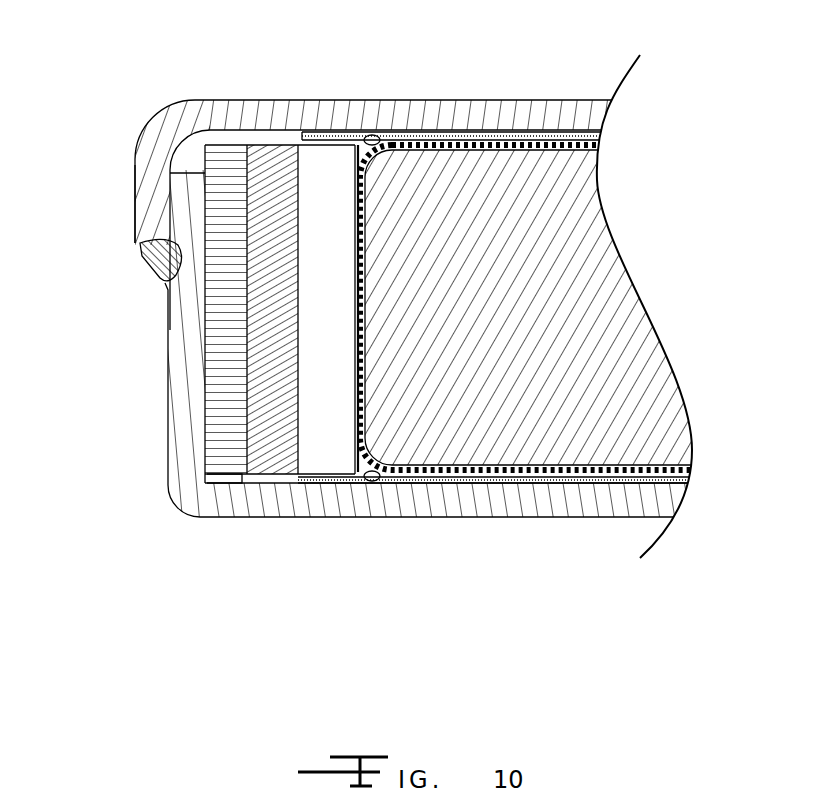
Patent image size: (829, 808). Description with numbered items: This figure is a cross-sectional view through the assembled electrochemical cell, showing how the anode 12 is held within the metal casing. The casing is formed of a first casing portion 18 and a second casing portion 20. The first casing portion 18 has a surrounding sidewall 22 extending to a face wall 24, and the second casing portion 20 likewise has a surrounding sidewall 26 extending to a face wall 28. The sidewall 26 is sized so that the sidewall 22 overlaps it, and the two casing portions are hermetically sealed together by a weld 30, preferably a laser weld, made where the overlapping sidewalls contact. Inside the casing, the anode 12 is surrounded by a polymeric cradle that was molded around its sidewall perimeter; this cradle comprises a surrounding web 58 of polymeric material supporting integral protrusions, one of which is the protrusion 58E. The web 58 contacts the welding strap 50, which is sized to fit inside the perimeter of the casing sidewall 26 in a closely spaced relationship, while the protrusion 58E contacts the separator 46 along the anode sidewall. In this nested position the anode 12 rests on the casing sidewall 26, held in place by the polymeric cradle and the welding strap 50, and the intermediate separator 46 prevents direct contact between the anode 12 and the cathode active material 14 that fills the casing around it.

The anode 12 is at (582, 318).
The cathode active material 14 is at (374, 138).
The first casing portion 18 is at (386, 275).
The second casing portion 20 is at (452, 538).
The sidewall 22 is at (138, 193).
The face wall 24 is at (450, 115).
The sidewall 26 is at (175, 395).
The face wall 28 is at (465, 505).
The weld 30 is at (147, 250).
The separator 46 is at (522, 145).
The welding strap 50 is at (225, 423).
The surrounding web 58 is at (211, 331).
The protrusion 58E is at (315, 362).